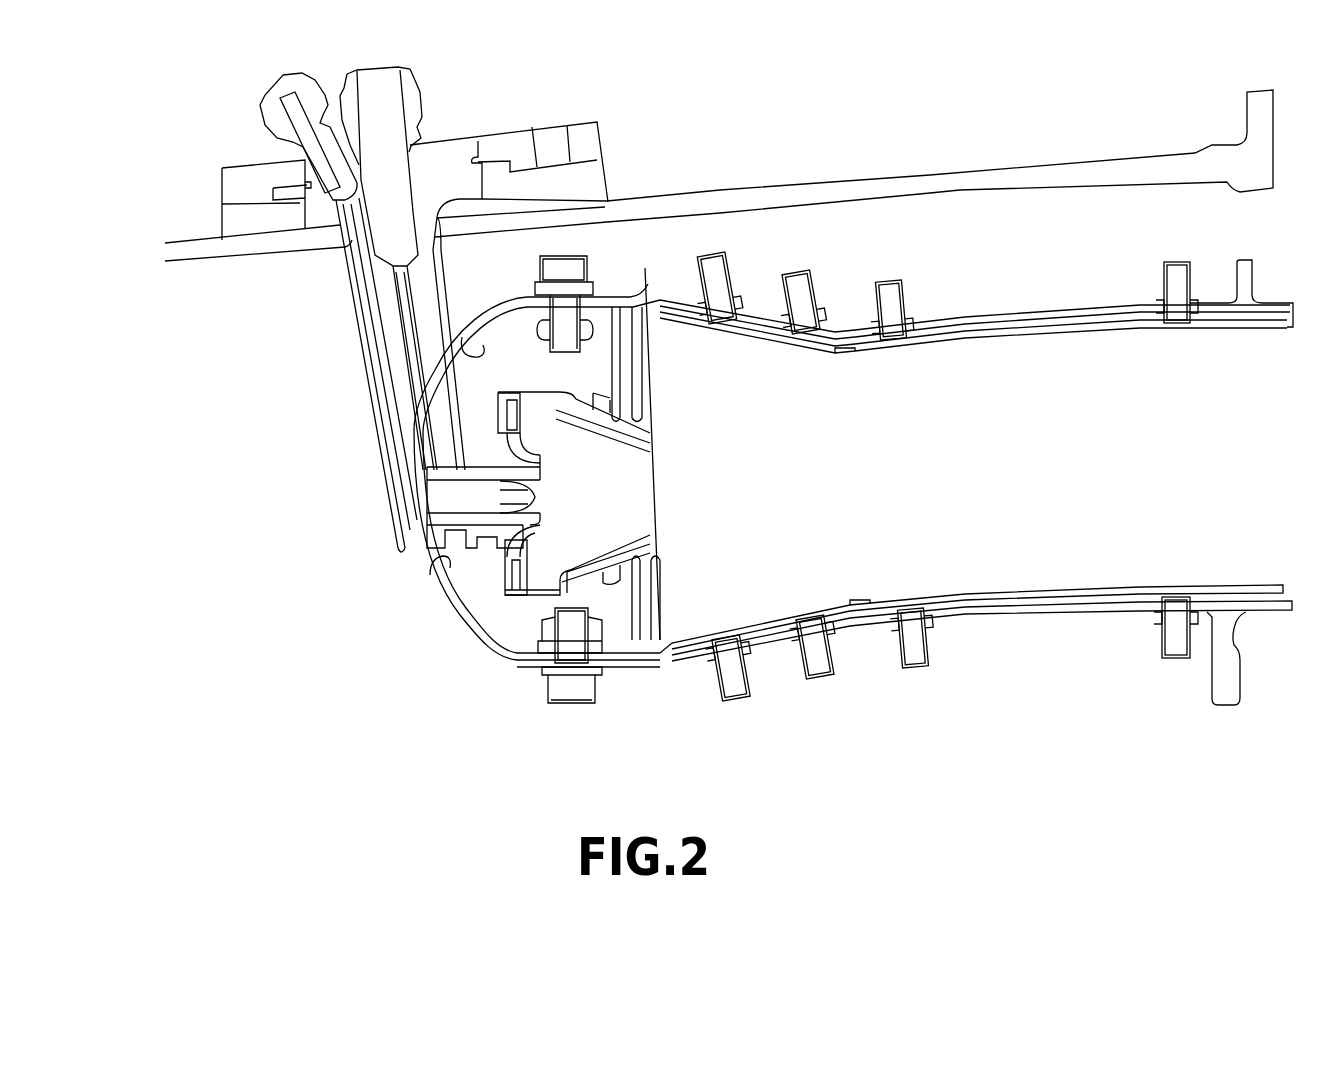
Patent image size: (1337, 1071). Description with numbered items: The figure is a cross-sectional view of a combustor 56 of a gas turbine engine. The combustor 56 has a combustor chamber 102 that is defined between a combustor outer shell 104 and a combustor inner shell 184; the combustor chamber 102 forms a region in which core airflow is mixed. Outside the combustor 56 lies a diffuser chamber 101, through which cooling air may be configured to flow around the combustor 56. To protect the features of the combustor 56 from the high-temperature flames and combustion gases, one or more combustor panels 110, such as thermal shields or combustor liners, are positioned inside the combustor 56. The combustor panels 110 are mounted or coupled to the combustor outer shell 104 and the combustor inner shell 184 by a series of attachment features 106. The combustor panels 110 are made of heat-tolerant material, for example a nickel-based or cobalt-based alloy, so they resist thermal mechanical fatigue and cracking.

The combustor 56 is at (1121, 203).
The diffuser chamber 101 is at (958, 247).
The combustor chamber 102 is at (1098, 472).
The combustor outer shell 104 is at (1048, 318).
The attachment features 106 is at (740, 284).
The combustor panels 110 is at (720, 330).
The combustor inner shell 184 is at (1040, 614).